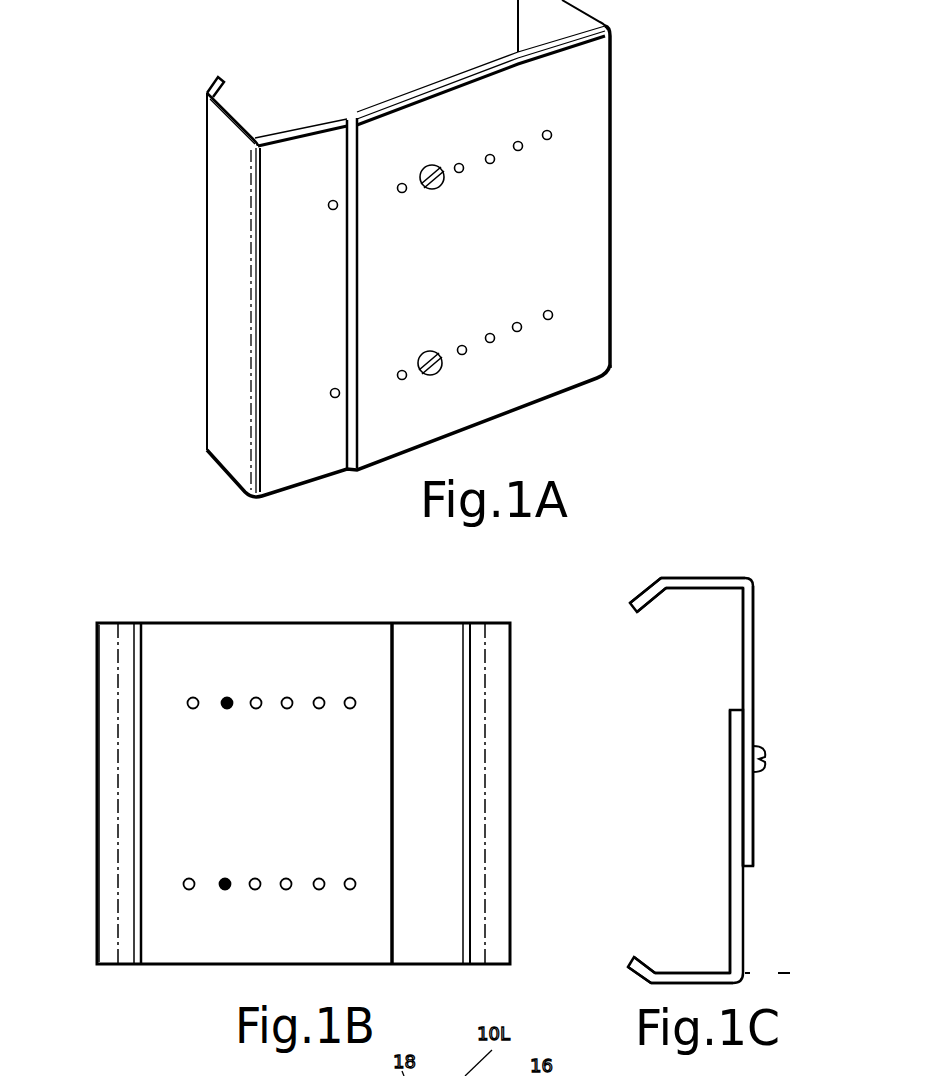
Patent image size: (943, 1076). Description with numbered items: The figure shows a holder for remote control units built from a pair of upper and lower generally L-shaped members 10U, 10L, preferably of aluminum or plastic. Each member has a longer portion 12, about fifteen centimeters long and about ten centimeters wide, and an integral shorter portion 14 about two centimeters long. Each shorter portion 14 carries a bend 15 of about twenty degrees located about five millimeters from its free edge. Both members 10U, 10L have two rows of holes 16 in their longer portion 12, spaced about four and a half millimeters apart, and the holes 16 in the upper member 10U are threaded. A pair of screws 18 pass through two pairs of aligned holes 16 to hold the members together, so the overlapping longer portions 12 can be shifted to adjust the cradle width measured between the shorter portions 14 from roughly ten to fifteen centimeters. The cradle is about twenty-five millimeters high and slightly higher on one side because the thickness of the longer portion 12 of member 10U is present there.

In FIG. 1A, the upper L-shaped member 10U is at (218, 341).
In FIG. 1C, the upper L-shaped member 10U is at (752, 885).
In FIG. 1A, the lower L-shaped member 10L is at (600, 199).
In FIG. 1B, the lower L-shaped member 10L is at (121, 847).
In FIG. 1C, the lower L-shaped member 10L is at (765, 604).
In FIG. 1A, the longer portion 12 is at (297, 121).
In FIG. 1B, the longer portion 12 is at (126, 740).
In FIG. 1C, the longer portion 12 is at (755, 653).
In FIG. 1A, the shorter portion 14 is at (218, 253).
In FIG. 1B, the shorter portion 14 is at (500, 782).
In FIG. 1C, the shorter portion 14 is at (704, 577).
In FIG. 1A, the bend 15 is at (205, 92).
In FIG. 1C, the bend 15 is at (650, 583).
In FIG. 1A, the holes 16 is at (553, 133).
In FIG. 1B, the holes 16 is at (188, 891).
In FIG. 1A, the screws 18 is at (426, 167).
In FIG. 1C, the screws 18 is at (766, 757).